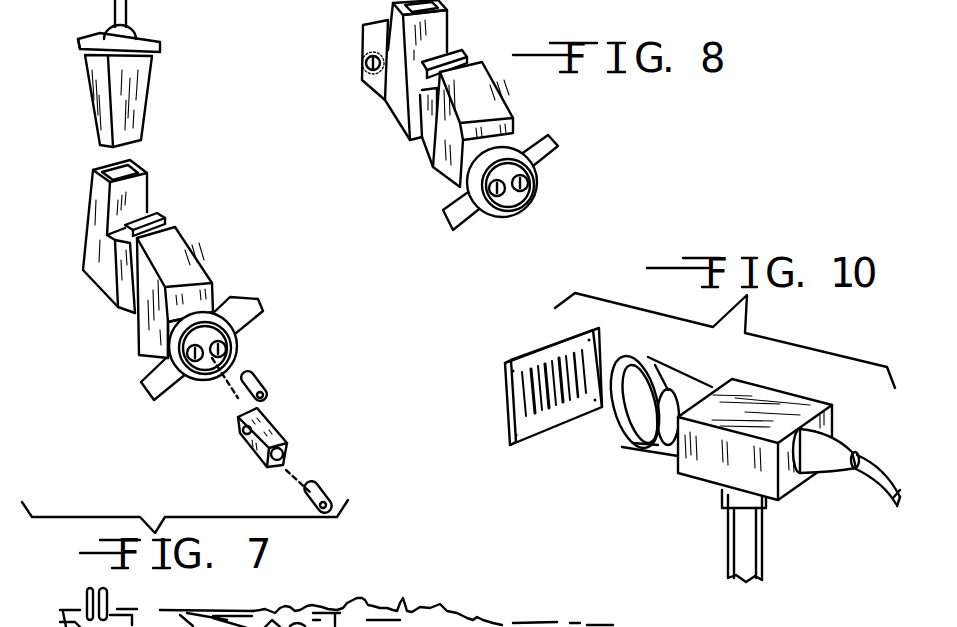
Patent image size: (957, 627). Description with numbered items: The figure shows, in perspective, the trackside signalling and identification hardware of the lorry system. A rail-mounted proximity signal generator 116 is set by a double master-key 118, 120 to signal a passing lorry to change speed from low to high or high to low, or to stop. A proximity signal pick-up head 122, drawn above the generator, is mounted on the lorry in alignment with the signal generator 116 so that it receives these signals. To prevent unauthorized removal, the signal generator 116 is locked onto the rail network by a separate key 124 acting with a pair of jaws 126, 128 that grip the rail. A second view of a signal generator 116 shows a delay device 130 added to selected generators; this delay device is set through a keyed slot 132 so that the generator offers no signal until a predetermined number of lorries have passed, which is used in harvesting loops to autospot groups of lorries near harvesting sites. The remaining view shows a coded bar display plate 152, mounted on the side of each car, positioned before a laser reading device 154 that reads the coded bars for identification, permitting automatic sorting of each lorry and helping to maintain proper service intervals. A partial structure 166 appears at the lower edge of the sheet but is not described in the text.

In FIG. 7, the rail-mounted proximity signal generator 116 is at (107, 293).
In FIG. 8, the rail-mounted proximity signal generator 116 is at (404, 143).
In FIG. 7, the double master-key 118 is at (270, 420).
In FIG. 7, the double master-key 120 is at (315, 485).
In FIG. 7, the proximity signal pick-up head 122 is at (158, 80).
In FIG. 7, the key 124 is at (250, 373).
In FIG. 7, the jaw 126 is at (190, 238).
In FIG. 7, the jaw 128 is at (156, 211).
In FIG. 8, the delay device 130 is at (363, 88).
In FIG. 8, the keyed slot 132 is at (365, 63).
In FIG. 10, the coded bar display plate 152 is at (502, 386).
In FIG. 10, the laser reading device 154 is at (698, 482).
In FIG. 7, the terminal posts 166 is at (122, 608).